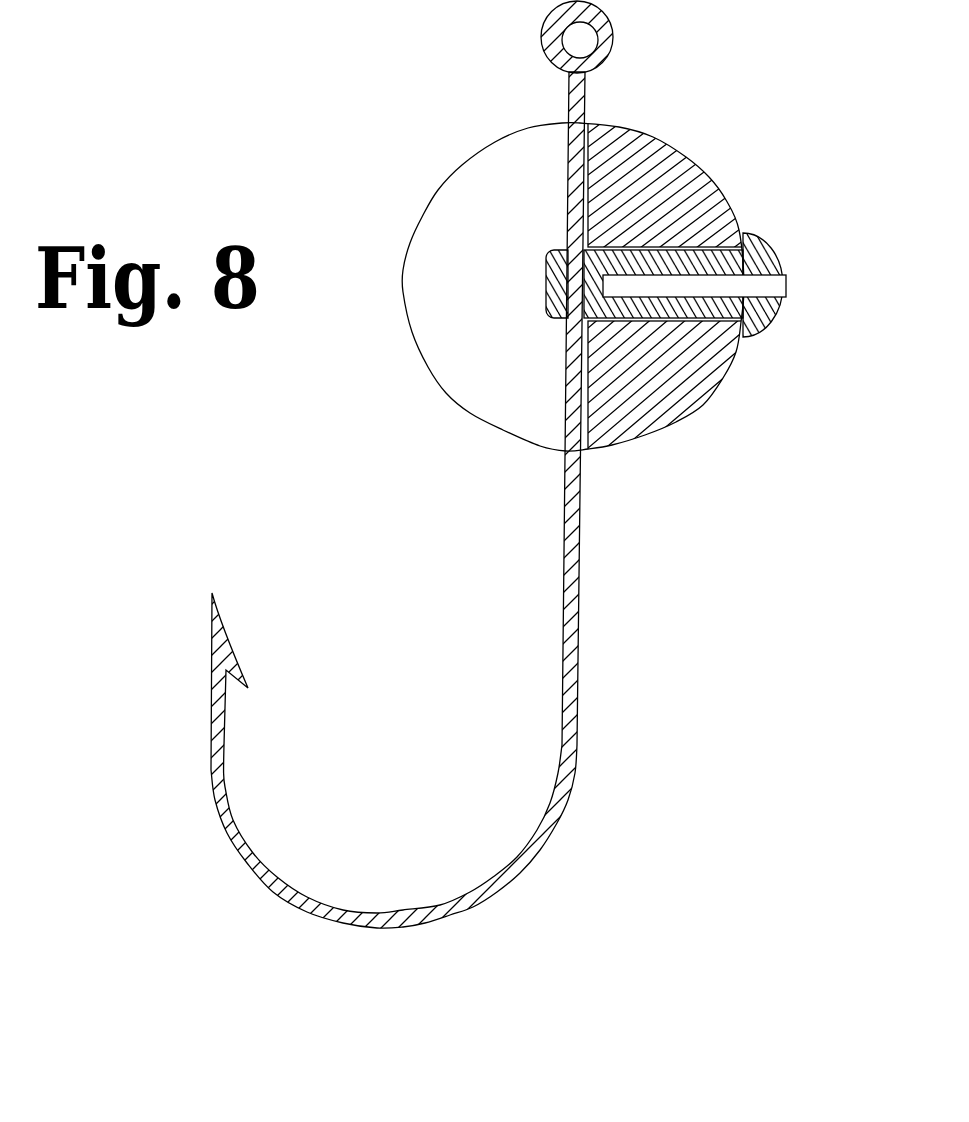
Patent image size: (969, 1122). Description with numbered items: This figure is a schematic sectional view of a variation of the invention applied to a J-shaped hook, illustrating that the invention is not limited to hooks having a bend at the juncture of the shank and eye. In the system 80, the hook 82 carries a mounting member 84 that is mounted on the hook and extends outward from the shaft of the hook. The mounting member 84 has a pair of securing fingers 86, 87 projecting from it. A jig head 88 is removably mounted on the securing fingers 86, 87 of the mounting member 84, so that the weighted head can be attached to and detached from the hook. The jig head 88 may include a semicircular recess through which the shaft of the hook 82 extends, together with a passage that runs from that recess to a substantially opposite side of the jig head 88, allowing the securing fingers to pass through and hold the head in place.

The system 80 is at (707, 120).
The hook 82 is at (578, 583).
The mounting member 84 is at (552, 300).
The securing finger 86 is at (767, 257).
The securing finger 87 is at (773, 310).
The jig head 88 is at (663, 392).